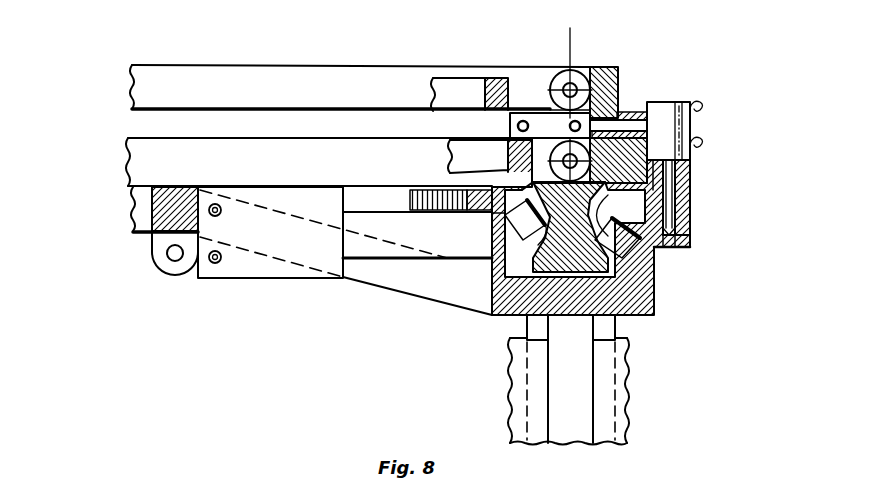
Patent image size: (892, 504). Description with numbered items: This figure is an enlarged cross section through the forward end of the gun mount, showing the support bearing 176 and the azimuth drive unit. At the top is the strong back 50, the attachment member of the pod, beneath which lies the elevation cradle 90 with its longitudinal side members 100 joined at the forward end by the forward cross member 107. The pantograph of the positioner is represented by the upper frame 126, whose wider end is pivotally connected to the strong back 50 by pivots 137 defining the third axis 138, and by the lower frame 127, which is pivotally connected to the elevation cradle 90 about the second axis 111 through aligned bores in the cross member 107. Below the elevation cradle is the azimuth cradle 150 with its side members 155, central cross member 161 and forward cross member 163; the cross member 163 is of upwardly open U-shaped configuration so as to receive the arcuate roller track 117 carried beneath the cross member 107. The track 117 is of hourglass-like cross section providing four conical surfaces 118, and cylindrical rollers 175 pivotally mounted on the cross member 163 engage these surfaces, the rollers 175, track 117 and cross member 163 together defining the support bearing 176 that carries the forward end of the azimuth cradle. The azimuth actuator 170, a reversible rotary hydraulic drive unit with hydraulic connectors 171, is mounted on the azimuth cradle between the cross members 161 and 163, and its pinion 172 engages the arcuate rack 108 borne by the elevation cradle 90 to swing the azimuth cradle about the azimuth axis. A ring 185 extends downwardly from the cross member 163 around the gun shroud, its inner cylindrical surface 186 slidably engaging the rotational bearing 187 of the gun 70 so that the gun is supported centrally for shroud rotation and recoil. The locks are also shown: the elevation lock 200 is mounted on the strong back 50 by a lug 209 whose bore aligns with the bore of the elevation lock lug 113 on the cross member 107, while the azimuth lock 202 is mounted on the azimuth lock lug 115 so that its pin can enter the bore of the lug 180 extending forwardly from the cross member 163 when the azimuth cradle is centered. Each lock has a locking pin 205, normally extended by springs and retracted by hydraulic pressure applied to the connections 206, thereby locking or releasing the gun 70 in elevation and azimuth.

The strong back 50 is at (126, 80).
The elevation cradle 90 is at (120, 165).
The side members 100 is at (211, 137).
The azimuth cradle 150 is at (126, 216).
The central cross member 161 is at (194, 222).
The azimuth actuator 170 is at (245, 283).
The hydraulic connectors 171 is at (217, 250).
The side members 155 is at (392, 286).
The pinion 172 is at (410, 201).
The rack 108 is at (473, 186).
The cylindrical rollers 175 is at (503, 208).
The upper frame 126 is at (443, 78).
The lower frame 127 is at (452, 150).
The connections 206 is at (522, 120).
The pivots 137 is at (573, 125).
The third axis 138 is at (573, 82).
The lug 209 is at (605, 68).
The locking pin 205 is at (626, 112).
The elevation lock lug 113 is at (630, 118).
The azimuth lock 202 is at (692, 82).
The elevation lock 200 is at (504, 126).
The second axis 111 is at (586, 160).
The roller track 117 is at (582, 210).
The surfaces 118 is at (540, 220).
The azimuth lock lug 115 is at (690, 181).
The forward cross member 107 is at (673, 186).
The lug 180 is at (690, 237).
The support bearing 176 is at (674, 251).
The forward cross member 163 is at (588, 306).
The inner cylindrical surface 186 is at (525, 330).
The ring 185 is at (617, 333).
The rotational bearing 187 is at (580, 435).
The gun 70 is at (636, 417).